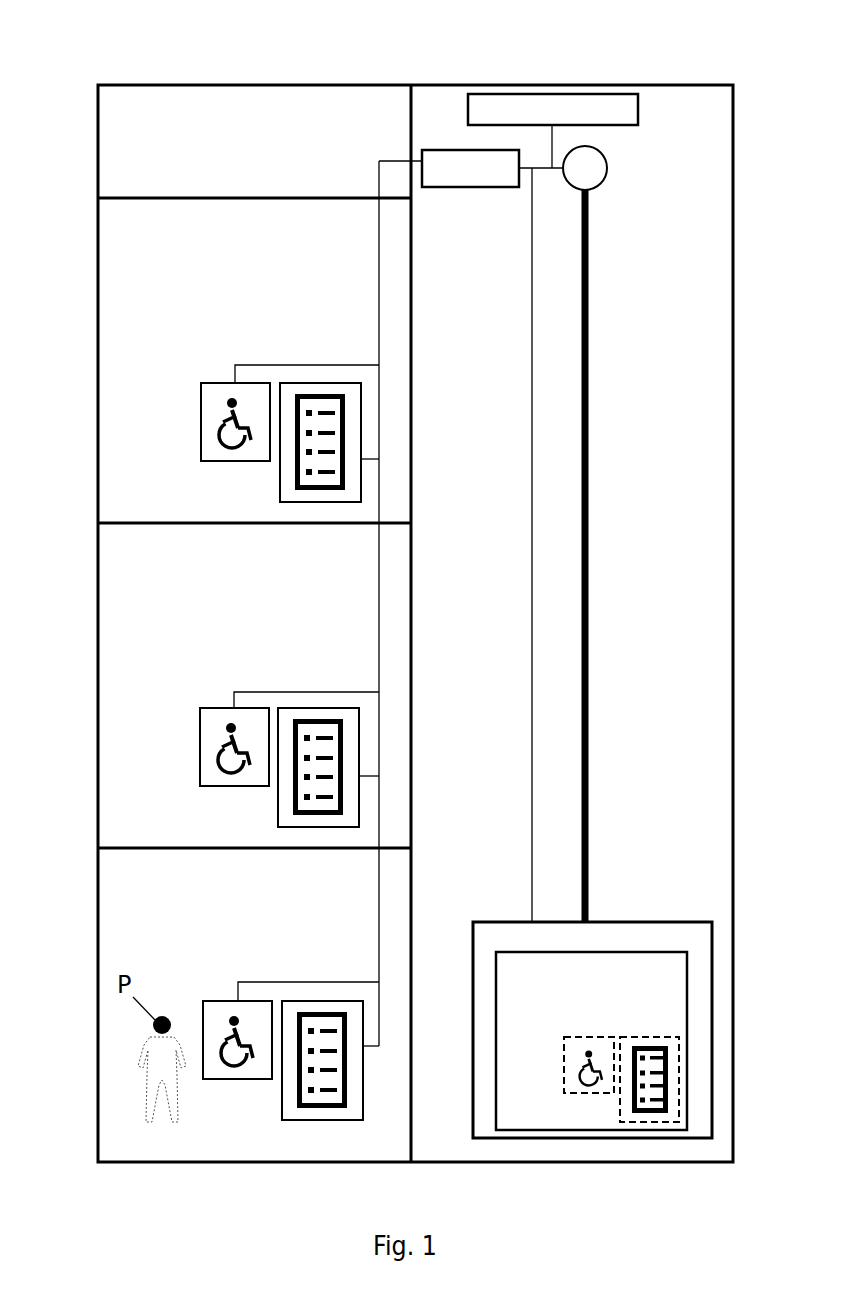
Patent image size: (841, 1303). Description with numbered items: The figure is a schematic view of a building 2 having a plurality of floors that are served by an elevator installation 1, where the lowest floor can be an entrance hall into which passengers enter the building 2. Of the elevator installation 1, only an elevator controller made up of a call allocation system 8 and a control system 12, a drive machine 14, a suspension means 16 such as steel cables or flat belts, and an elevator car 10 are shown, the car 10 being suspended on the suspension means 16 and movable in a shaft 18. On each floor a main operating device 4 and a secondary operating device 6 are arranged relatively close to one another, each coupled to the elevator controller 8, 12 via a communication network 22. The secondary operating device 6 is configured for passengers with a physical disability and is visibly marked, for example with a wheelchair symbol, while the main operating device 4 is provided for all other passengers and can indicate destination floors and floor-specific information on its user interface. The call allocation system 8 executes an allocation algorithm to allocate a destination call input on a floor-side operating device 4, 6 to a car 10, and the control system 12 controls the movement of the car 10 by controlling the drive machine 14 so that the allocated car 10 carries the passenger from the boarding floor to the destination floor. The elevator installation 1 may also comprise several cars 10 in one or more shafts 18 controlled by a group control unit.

The elevator installation 1 is at (348, 147).
The building 2 is at (230, 83).
The elevator operating device 4 is at (280, 476).
The elevator operating device 6 is at (232, 461).
The call allocation system 8 is at (495, 187).
The elevator car 10 is at (570, 1138).
The control system 12 is at (639, 103).
The drive machine 14 is at (607, 170).
The suspension means 16 is at (588, 485).
The shaft 18 is at (672, 762).
The communication network 22 is at (379, 308).